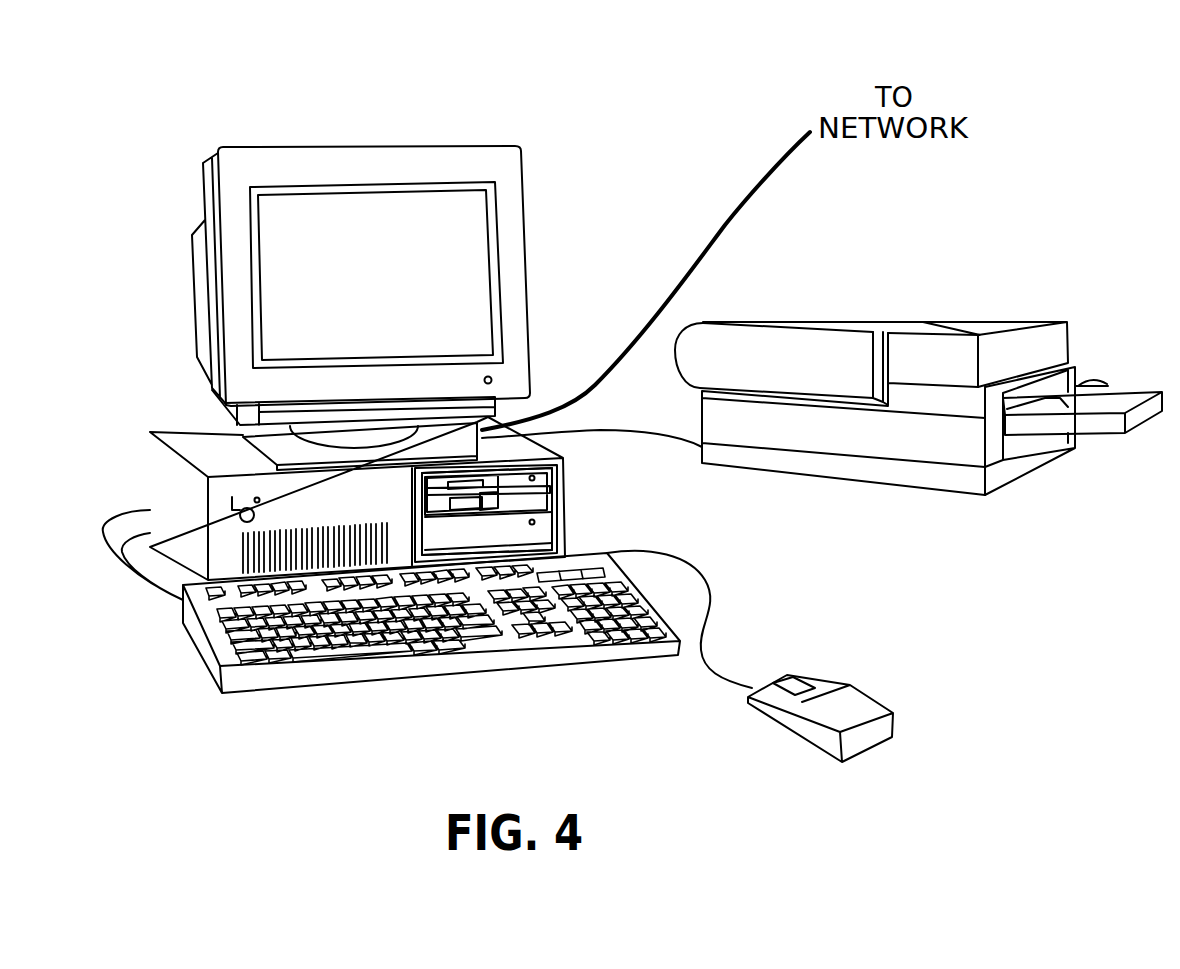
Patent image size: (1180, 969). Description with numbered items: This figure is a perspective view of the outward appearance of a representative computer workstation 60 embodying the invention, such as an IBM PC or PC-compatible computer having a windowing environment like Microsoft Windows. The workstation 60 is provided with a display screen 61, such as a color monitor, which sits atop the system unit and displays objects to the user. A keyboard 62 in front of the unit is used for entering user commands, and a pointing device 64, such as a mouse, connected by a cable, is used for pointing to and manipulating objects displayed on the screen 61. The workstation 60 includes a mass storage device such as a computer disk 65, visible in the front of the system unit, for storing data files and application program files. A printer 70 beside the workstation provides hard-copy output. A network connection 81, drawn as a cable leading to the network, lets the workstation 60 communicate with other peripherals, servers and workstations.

The workstation 60 is at (676, 107).
The display screen 61 is at (392, 152).
The keyboard 62 is at (297, 660).
The pointing device 64 is at (857, 753).
The computer disk 65 is at (517, 502).
The printer 70 is at (828, 320).
The network connection 81 is at (732, 212).